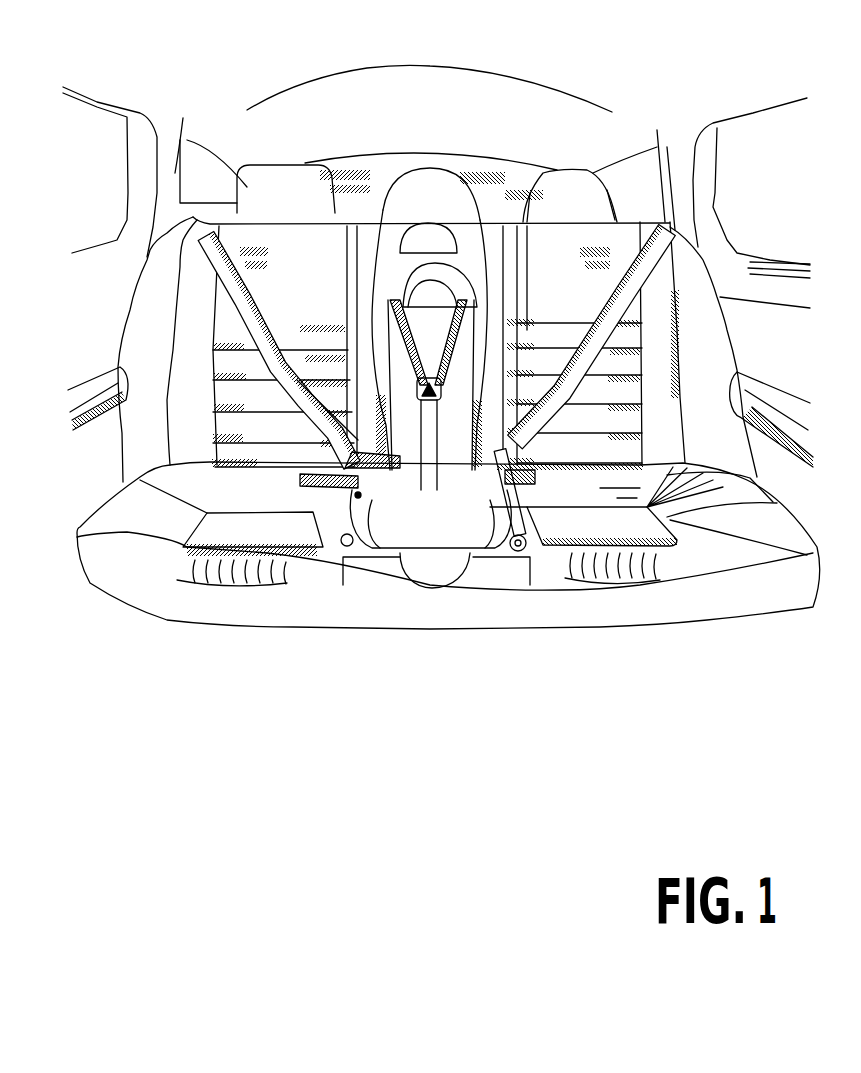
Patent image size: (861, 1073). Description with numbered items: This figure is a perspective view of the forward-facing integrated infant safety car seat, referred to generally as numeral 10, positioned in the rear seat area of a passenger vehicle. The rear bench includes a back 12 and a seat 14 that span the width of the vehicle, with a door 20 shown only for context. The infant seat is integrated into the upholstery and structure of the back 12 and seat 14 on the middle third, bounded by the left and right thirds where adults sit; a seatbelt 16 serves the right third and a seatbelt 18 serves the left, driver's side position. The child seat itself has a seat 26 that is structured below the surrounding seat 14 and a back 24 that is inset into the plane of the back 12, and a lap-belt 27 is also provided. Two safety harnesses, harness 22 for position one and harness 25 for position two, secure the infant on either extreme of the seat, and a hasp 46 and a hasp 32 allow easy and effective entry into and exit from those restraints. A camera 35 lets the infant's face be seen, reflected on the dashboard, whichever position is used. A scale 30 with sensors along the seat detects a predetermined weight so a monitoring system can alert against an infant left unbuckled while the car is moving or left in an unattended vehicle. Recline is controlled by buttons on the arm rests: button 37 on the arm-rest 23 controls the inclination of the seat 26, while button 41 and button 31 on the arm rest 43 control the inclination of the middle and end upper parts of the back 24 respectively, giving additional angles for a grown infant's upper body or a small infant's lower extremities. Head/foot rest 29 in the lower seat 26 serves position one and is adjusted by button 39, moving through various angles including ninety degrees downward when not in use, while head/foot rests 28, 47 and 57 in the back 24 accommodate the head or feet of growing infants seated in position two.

The integrated safety car seat 10 is at (202, 77).
The back 12 is at (308, 267).
The seat 14 is at (615, 522).
The seatbelt 16 is at (199, 238).
The seatbelt 18 is at (647, 263).
The door 20 is at (87, 262).
The harness 22 is at (500, 515).
The arm-rest 23 is at (522, 550).
The back 24 is at (440, 337).
The harness 25 is at (400, 301).
The seat 26 is at (450, 530).
The lap-belt 27 is at (398, 418).
The head/foot rest 28 is at (439, 295).
The head/foot rest 29 is at (423, 580).
The scale 30 is at (408, 513).
The button 31 is at (360, 490).
The hasp 32 is at (417, 386).
The camera 35 is at (430, 220).
The button 37 is at (343, 522).
The button 39 is at (407, 580).
The button 41 is at (372, 305).
The arm rest 43 is at (497, 278).
The hasp 46 is at (470, 485).
The head/foot rest 47 is at (400, 233).
The head/foot rest 57 is at (395, 192).